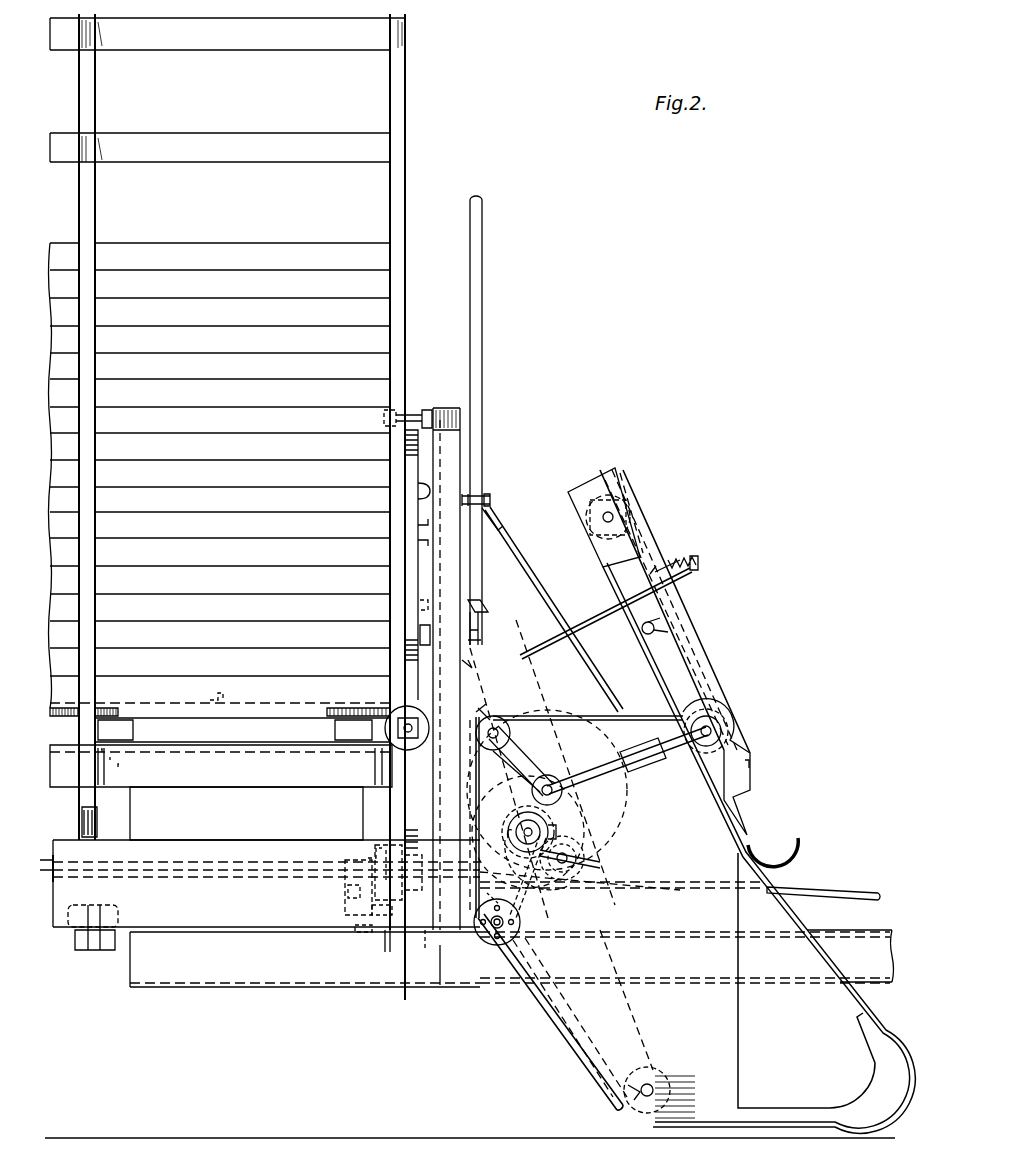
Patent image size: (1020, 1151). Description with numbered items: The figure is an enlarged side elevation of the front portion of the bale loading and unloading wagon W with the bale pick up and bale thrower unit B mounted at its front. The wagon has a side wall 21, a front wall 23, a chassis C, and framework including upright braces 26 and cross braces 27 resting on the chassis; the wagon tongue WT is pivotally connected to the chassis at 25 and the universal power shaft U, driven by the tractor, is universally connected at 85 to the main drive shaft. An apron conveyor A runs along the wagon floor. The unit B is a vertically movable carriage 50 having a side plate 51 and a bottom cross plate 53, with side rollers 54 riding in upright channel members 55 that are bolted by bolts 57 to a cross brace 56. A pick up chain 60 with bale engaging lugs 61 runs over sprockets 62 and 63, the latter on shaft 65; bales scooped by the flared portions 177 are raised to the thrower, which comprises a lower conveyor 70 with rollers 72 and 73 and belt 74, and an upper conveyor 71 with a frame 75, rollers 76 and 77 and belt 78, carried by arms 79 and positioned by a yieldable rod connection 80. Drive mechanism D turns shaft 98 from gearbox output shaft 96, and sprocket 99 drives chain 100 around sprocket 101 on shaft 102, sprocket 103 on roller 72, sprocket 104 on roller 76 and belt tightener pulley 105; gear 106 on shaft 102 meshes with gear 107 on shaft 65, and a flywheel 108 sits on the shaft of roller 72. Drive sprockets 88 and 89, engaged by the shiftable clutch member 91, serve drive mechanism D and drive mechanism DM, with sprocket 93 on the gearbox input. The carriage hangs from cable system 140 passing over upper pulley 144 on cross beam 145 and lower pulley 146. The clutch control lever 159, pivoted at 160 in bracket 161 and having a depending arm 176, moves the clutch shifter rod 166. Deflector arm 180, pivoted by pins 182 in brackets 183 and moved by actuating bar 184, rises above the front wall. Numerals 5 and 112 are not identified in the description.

The bale loading and unloading wagon W is at (420, 180).
The upright braces 26 is at (388, 208).
The side wall 21 is at (290, 322).
The cross braces 27 is at (118, 811).
The apron conveyor A is at (185, 702).
The cable system 140 is at (400, 688).
The clutch shifter rod 166 is at (196, 856).
The chassis C is at (63, 940).
The tongue pivot 25 is at (100, 950).
The pulley / section line 5 is at (39, 841).
The end plate 112 is at (52, 878).
The drive mechanism for apron conveyor and transverse conveyor DM is at (366, 844).
The drive sprocket 89 is at (372, 845).
The shiftable clutch member 91 is at (386, 850).
The drive sprocket 88 is at (414, 848).
The lever pivot 160 is at (346, 912).
The fixed bracket 161 is at (386, 918).
The clutch control lever 159 is at (360, 935).
The depending arm 176 is at (386, 962).
The lower sprocket 93 is at (412, 935).
The second lower pulley 146 is at (440, 960).
The upright channel members 55 is at (448, 406).
The bolts 57 is at (430, 408).
The cross brace 56 is at (384, 421).
The front wall 23 is at (420, 491).
The side rollers 54 is at (432, 608).
The cross beam 145 is at (430, 633).
The deflector arm 180 is at (484, 222).
The brackets 183 is at (487, 494).
The pins 182 is at (491, 498).
The upper roller 73 is at (501, 528).
The carriage 50 is at (527, 557).
The actuating bar 184 is at (532, 630).
The upper pulley 144 is at (470, 668).
The lower conveyor 70 is at (533, 669).
The endless belt 74 is at (530, 691).
The yieldable rod connection 80 is at (591, 612).
The frame 75 is at (617, 470).
The upper roller 77 is at (596, 496).
The bale pick up and bale thrower unit B is at (719, 635).
The upper conveyor 71 is at (712, 668).
The flywheel 108 is at (613, 674).
The endless belt 78 is at (647, 655).
The sprocket 104 is at (735, 722).
The lower roller 76 is at (750, 742).
The side plate 51 is at (703, 848).
The belt tightener pulley 105 is at (492, 715).
The sprocket 103 is at (556, 776).
The lower roller 72 is at (565, 791).
The arms 79 is at (654, 770).
The sprocket 101 is at (558, 824).
The gear 106 is at (545, 832).
The shaft 102 is at (522, 820).
The shaft 65 is at (574, 856).
The sprocket 63 is at (592, 866).
The gear 107 is at (600, 893).
The universal connection 85 is at (550, 879).
The drive chain 100 is at (540, 918).
The output shaft 96 is at (488, 895).
The shaft 98 is at (492, 930).
The sprocket 99 is at (488, 925).
The drive mechanism for bale pick up and bale thrower unit D is at (513, 969).
The bottom cross plate 53 is at (578, 1062).
The sprocket 62 is at (665, 1060).
The pick up chain 60 is at (648, 998).
The bale engaging lugs 61 is at (660, 1046).
The flared portions 177 is at (812, 1038).
The universal power shaft U is at (826, 888).
The wagon tongue WT is at (883, 921).